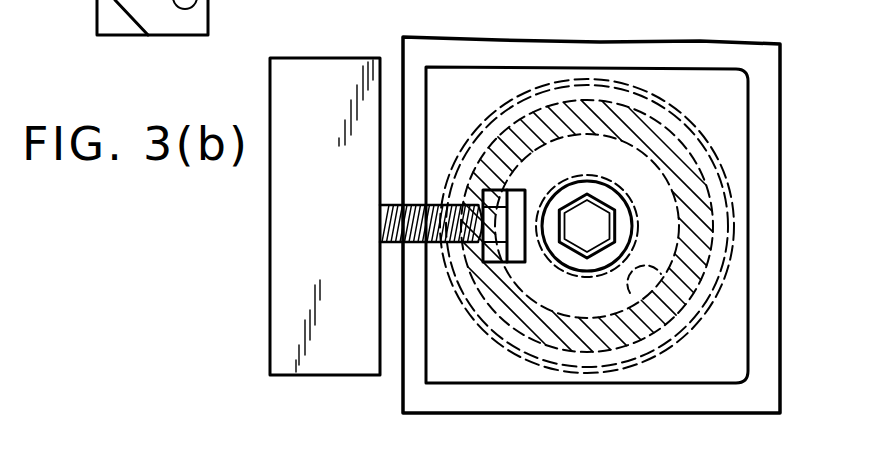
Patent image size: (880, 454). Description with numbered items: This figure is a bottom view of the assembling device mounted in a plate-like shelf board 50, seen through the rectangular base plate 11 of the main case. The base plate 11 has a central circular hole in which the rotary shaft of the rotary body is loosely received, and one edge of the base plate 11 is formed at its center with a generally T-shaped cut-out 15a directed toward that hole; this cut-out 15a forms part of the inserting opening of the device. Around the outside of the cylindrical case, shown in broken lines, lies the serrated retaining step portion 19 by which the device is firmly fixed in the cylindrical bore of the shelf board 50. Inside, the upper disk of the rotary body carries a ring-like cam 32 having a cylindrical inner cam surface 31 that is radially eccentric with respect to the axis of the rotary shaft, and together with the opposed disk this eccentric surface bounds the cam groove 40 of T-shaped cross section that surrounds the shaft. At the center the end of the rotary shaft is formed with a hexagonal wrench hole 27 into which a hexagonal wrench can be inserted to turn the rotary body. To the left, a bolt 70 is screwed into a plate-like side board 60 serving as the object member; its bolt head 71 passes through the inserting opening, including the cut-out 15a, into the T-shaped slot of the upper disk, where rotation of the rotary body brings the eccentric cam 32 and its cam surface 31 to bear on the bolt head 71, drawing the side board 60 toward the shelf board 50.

The base plate 11 is at (737, 97).
The cut-out 15a is at (518, 262).
The retaining step portion 19 is at (673, 110).
The hexagonal wrench hole 27 is at (600, 233).
The cylindrical inner cam surface 31 is at (630, 298).
The ring-like cam 32 is at (690, 270).
The cam groove 40 is at (657, 207).
The shelf board 50 is at (674, 57).
The side board 60 is at (287, 312).
The bolt 70 is at (392, 243).
The bolt head 71 is at (497, 262).